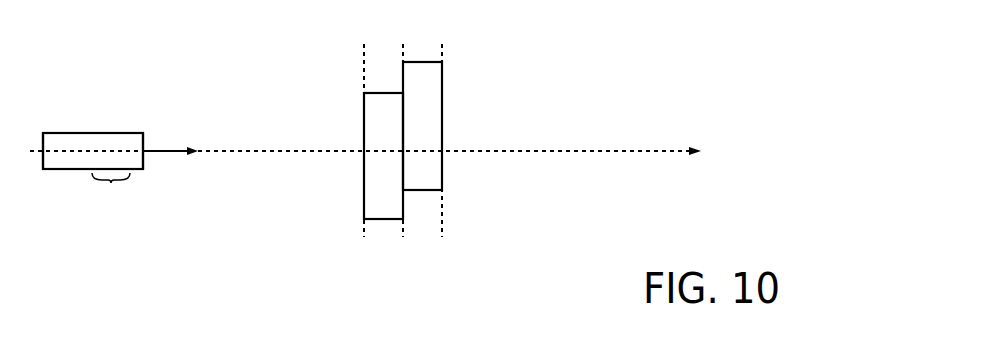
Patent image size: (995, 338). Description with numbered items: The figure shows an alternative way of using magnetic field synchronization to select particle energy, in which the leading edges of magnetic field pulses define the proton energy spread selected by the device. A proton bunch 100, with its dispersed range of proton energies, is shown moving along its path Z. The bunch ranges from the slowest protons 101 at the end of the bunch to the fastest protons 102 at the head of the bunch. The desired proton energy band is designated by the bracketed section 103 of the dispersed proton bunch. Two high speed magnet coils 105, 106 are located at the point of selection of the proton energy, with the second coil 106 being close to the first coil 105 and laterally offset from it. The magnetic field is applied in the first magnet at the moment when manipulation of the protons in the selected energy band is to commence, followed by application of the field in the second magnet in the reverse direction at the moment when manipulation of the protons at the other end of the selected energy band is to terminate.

The proton bunch 100 is at (117, 133).
The slowest protons 101 is at (47, 169).
The fastest protons 102 is at (147, 169).
The bracketed section 103 is at (111, 183).
The first high speed magnet coil 105 is at (383, 219).
The second high speed magnet coil 106 is at (418, 62).
The path Z is at (382, 161).